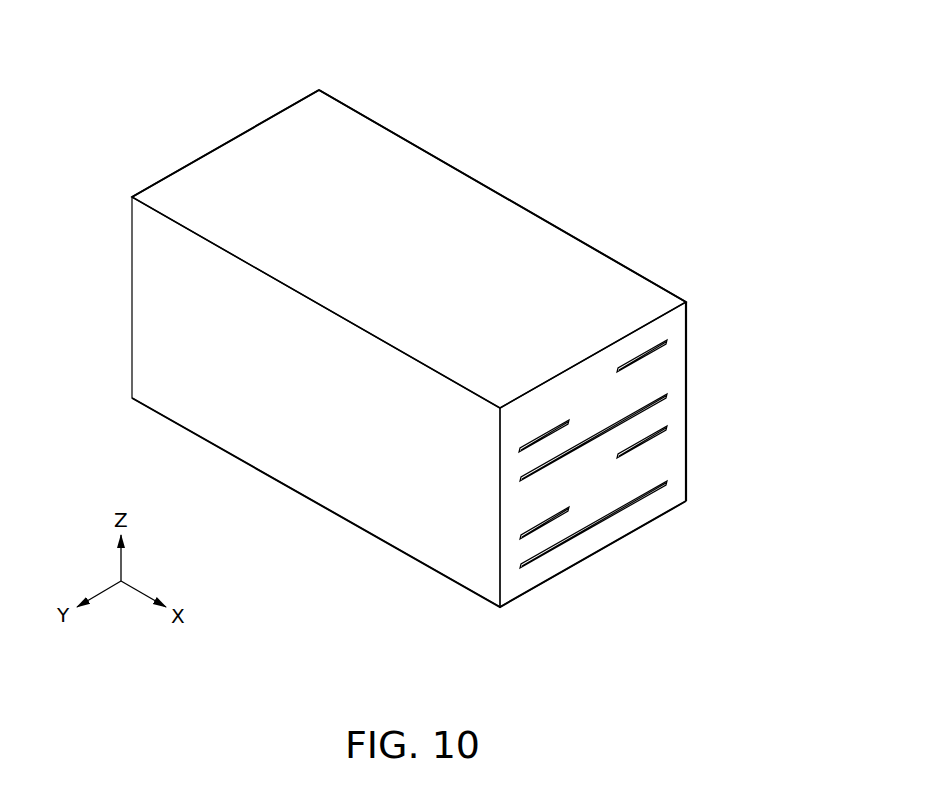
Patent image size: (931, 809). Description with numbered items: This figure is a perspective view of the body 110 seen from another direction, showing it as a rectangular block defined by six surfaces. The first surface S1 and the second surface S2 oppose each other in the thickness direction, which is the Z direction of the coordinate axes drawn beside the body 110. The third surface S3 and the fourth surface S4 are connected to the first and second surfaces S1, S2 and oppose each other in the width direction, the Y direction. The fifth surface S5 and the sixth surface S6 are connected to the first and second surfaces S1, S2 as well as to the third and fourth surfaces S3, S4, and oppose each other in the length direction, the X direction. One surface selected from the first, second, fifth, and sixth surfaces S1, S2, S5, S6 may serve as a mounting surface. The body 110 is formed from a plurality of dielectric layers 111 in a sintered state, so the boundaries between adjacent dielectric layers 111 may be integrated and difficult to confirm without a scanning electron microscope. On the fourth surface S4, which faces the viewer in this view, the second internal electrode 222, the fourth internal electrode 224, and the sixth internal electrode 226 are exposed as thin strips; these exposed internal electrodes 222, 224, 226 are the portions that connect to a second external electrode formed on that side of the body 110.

The body 110 is at (658, 41).
The first surface S1 is at (395, 182).
The second surface S2 is at (371, 535).
The third surface S3 is at (215, 147).
The fourth surface S4 is at (592, 455).
The fifth surface S5 is at (259, 430).
The sixth surface S6 is at (569, 232).
The dielectric layer 111 is at (677, 380).
The second internal electrode 222 is at (655, 356).
The fourth internal electrode 224 is at (518, 455).
The sixth internal electrode 226 is at (662, 403).